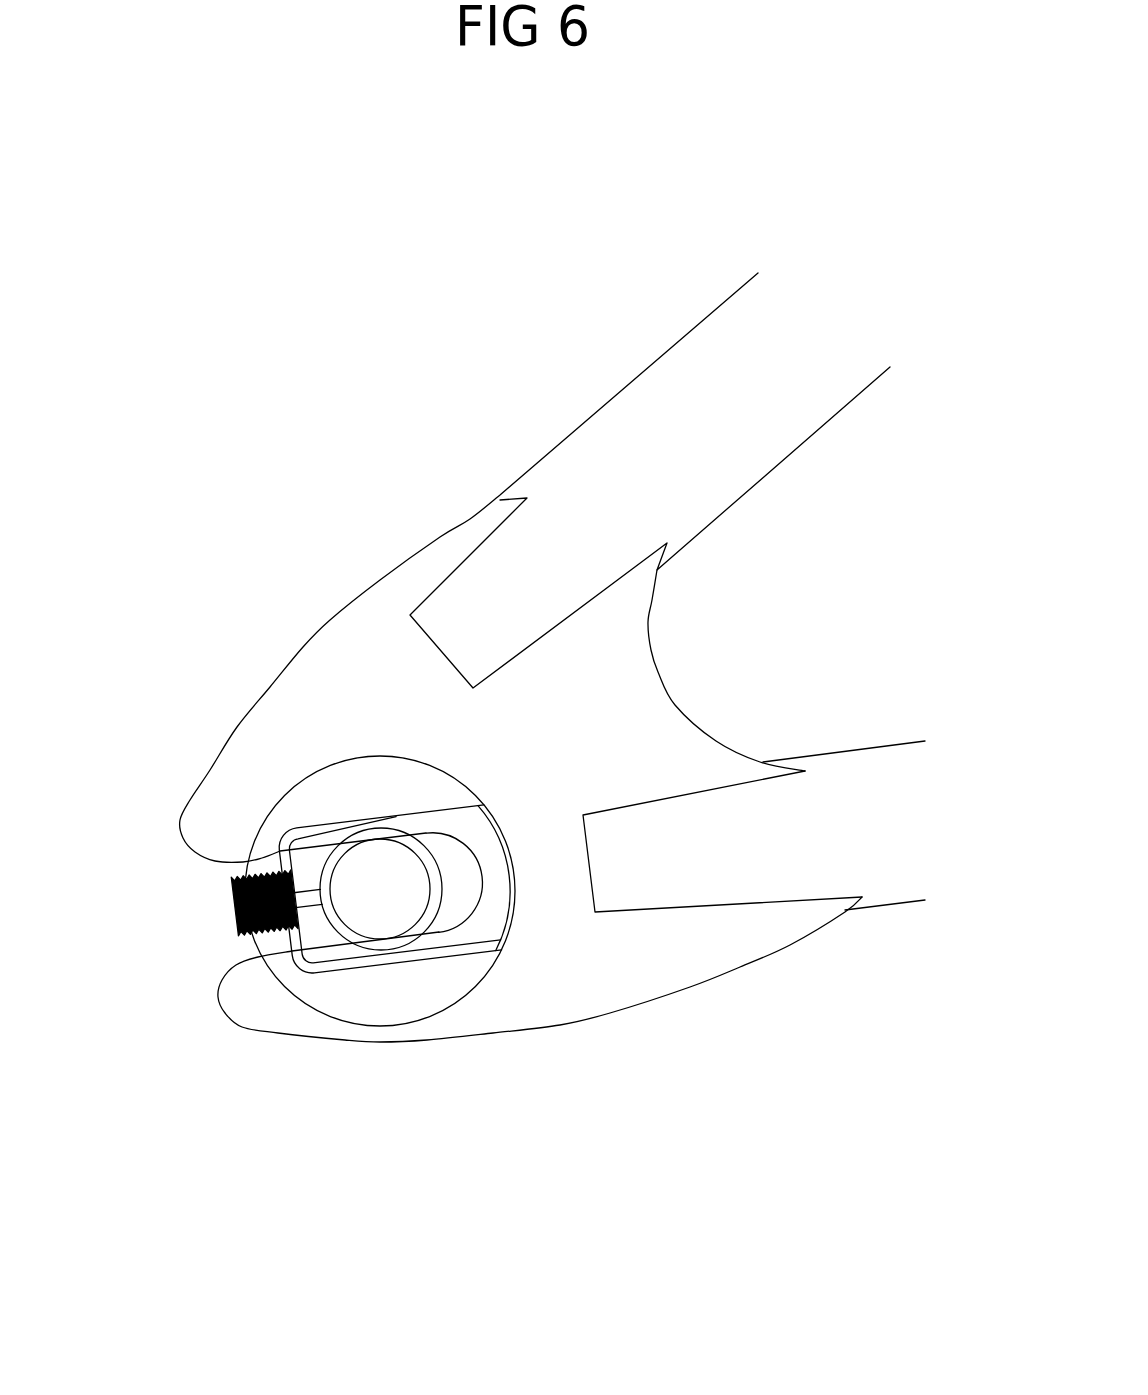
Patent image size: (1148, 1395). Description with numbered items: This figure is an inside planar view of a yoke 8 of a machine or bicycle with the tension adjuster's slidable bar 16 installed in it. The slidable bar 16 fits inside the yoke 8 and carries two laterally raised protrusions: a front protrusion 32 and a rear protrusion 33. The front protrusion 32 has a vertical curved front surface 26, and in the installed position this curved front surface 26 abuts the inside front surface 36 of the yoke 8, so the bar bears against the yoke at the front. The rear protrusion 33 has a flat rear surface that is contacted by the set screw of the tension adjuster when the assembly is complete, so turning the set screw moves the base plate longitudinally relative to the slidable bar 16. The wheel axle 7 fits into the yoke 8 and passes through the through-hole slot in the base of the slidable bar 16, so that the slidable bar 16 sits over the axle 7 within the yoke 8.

The yoke 8 is at (328, 667).
The slidable bar 16 is at (289, 866).
The curved front surface 26 is at (456, 819).
The inside front surface 36 is at (491, 844).
The front protrusion 32 is at (464, 904).
The wheel axle 7 is at (366, 912).
The rear protrusion 33 is at (306, 929).